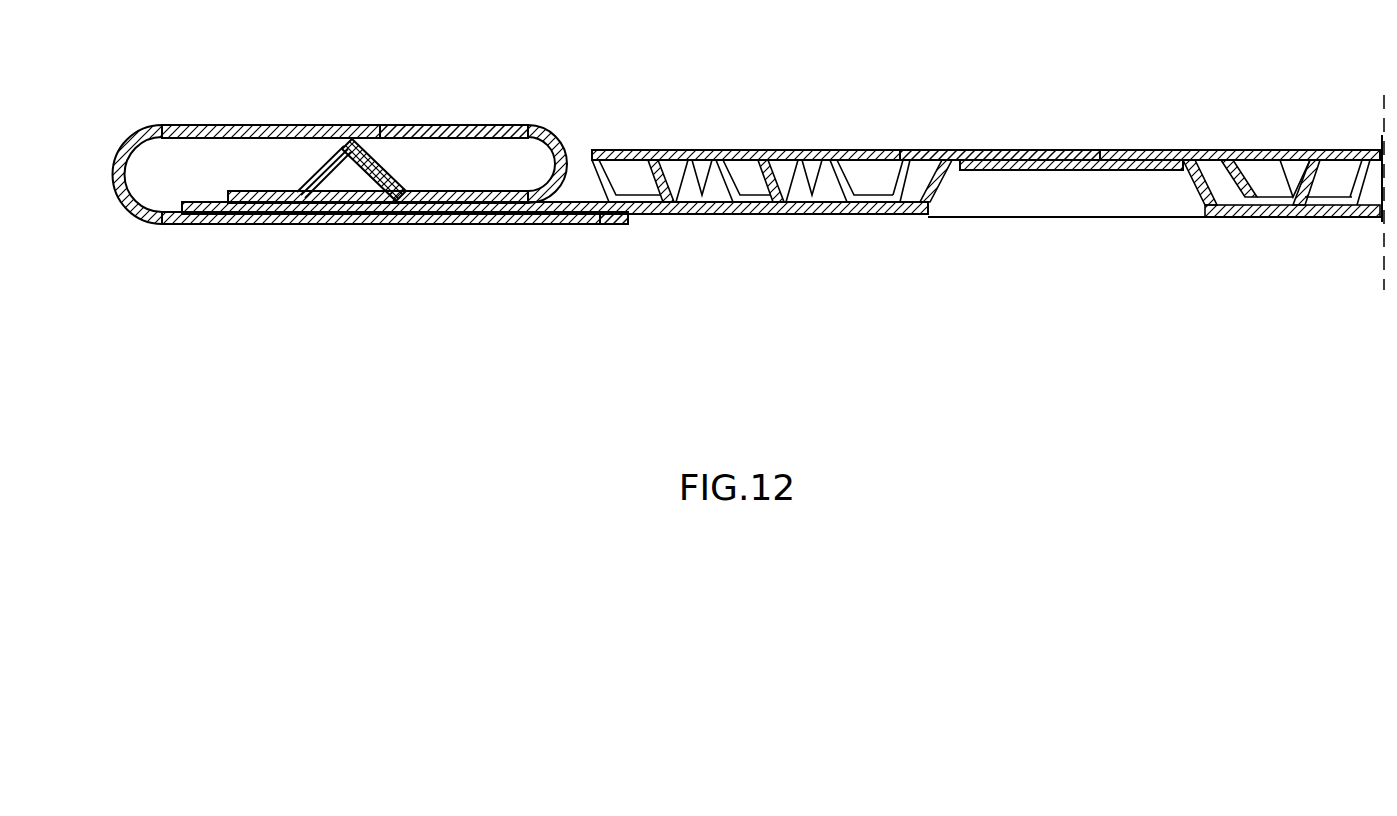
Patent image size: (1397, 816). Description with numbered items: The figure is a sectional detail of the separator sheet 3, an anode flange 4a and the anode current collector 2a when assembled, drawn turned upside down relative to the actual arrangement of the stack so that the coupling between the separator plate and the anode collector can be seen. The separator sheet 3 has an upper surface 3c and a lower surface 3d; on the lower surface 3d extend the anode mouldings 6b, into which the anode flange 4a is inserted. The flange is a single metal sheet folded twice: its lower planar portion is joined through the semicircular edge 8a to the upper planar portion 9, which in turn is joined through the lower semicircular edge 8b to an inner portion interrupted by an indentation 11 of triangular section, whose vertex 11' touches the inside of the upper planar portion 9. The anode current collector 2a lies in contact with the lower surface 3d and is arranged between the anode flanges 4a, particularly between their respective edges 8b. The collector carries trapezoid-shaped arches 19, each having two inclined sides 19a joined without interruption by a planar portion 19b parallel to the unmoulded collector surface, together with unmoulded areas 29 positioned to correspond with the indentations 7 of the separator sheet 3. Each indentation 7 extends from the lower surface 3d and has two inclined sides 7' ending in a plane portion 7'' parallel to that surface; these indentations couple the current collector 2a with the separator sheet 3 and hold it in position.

The anode current collector 2a is at (982, 140).
The separator sheet 3 is at (218, 212).
The upper surface 3c is at (611, 215).
The lower surface 3d is at (580, 202).
The anode flange 4a is at (410, 124).
The anode moulding 6b is at (338, 176).
The indentation 7 is at (1156, 192).
The inclined side 7' is at (1066, 236).
The plane portion 7'' is at (1080, 232).
The semicircular edge 8a is at (112, 171).
The semicircular edge 8b is at (562, 138).
The upper planar portion 9 is at (483, 125).
The indentation 11 is at (311, 130).
The vertex 11' is at (369, 120).
The arch 19 is at (904, 176).
The inclined side 19a is at (656, 150).
The planar portion 19b is at (695, 204).
The unmoulded area 29 is at (1058, 154).